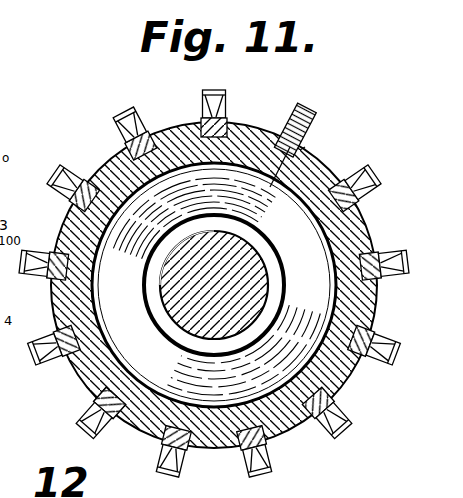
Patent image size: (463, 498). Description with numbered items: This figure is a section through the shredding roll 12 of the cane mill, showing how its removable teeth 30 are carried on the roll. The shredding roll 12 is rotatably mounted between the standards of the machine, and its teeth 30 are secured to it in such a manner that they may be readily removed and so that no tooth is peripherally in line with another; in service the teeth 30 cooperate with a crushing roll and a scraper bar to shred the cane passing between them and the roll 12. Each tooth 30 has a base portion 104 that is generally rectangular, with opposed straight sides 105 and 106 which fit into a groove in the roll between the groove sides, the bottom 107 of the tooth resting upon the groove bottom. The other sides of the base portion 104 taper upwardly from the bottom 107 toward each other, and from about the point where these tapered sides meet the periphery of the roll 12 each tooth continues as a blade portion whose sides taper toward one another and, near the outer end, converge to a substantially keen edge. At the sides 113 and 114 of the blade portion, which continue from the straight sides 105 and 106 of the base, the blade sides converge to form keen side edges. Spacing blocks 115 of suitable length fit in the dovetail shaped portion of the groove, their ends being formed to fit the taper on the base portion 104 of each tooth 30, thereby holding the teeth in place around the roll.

The shredding roll 12 is at (321, 171).
The teeth 30 is at (373, 172).
The base portion 104 is at (113, 398).
The straight side 105 is at (275, 138).
The straight side 106 is at (305, 147).
The bottom 107 is at (274, 175).
The side 113 is at (227, 104).
The side 114 is at (215, 99).
The spacing blocks 115 is at (229, 119).